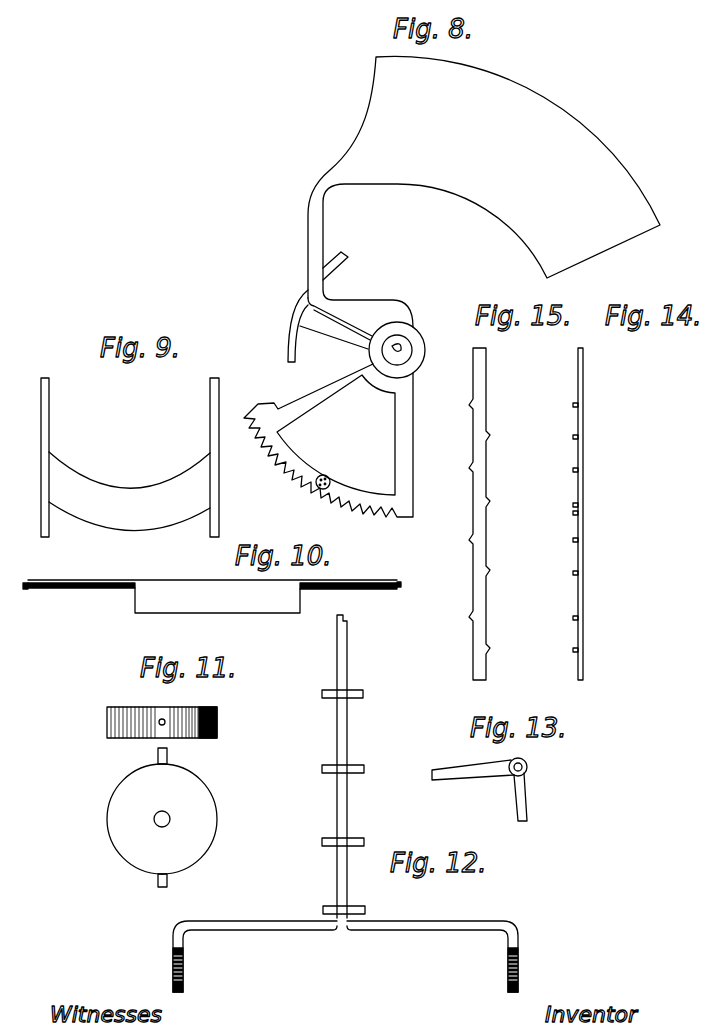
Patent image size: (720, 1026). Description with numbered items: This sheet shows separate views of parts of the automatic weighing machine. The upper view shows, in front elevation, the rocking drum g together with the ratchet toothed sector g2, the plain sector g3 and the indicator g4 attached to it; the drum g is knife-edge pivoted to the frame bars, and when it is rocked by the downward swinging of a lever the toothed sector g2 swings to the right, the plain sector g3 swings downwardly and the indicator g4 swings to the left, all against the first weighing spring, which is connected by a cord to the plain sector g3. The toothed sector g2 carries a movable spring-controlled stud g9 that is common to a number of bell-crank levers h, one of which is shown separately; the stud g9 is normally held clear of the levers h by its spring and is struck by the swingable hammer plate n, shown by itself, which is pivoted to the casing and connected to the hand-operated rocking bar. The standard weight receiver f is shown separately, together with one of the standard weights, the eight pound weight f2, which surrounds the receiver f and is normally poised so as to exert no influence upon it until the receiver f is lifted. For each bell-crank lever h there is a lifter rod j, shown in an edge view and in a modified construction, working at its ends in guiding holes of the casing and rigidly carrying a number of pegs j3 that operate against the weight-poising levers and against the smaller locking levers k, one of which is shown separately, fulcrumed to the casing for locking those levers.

In FIG. 8, the indicator g4 is at (480, 202).
In FIG. 8, the plain sector g3 is at (292, 316).
In FIG. 8, the rocking drum g is at (422, 340).
In FIG. 8, the ratchet toothed sector g2 is at (403, 422).
In FIG. 8, the movable spring controlled stud g9 is at (323, 475).
In FIG. 9, the hammer plate n is at (112, 498).
In FIG. 10, the locking lever k is at (212, 597).
In FIG. 11, the eight pound standard weight f2 is at (211, 757).
In FIG. 12, the standard weight receiver f is at (345, 808).
In FIG. 13, the bell-crank lever h is at (514, 798).
In FIG. 14, the lifter rod j is at (577, 452).
In FIG. 15, the lifter rod j is at (473, 432).
In FIG. 14, the pegs j3 is at (575, 574).